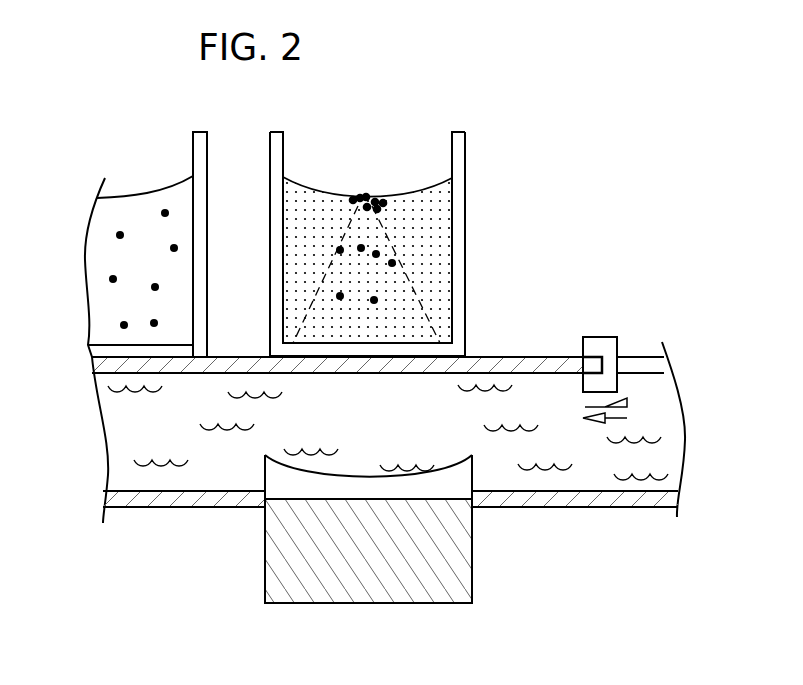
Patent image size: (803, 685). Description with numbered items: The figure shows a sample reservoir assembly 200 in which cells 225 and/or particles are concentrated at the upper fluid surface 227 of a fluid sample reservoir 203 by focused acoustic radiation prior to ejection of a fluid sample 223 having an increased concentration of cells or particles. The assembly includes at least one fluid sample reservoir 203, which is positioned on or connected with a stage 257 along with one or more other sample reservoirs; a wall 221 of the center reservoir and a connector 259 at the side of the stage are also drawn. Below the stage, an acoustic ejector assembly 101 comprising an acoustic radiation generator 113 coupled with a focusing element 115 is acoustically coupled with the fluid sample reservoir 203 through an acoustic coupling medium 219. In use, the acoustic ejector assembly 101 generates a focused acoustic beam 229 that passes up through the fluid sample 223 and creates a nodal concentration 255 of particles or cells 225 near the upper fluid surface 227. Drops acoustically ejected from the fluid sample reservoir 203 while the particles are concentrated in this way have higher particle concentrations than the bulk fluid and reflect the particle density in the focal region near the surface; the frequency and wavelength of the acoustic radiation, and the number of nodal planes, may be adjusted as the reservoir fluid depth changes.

The sample reservoir assembly 200 is at (415, 60).
The fluid sample reservoir 203 is at (135, 155).
The container wall 221 is at (465, 297).
The fluid sample 223 is at (385, 332).
The cells 225 is at (340, 250).
The upper fluid surface 227 is at (420, 190).
The focused acoustic beam 229 is at (392, 247).
The nodal concentration 255 is at (358, 197).
The stage 257 is at (500, 357).
The connector / actuator 259 is at (597, 337).
The acoustic coupling medium 219 is at (183, 427).
The acoustic ejector assembly 101 is at (225, 555).
The acoustic radiation generator 113 is at (472, 560).
The focusing element 115 is at (472, 477).